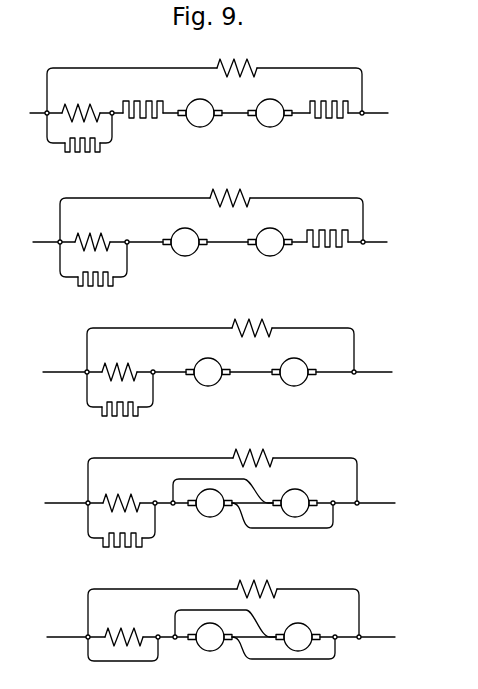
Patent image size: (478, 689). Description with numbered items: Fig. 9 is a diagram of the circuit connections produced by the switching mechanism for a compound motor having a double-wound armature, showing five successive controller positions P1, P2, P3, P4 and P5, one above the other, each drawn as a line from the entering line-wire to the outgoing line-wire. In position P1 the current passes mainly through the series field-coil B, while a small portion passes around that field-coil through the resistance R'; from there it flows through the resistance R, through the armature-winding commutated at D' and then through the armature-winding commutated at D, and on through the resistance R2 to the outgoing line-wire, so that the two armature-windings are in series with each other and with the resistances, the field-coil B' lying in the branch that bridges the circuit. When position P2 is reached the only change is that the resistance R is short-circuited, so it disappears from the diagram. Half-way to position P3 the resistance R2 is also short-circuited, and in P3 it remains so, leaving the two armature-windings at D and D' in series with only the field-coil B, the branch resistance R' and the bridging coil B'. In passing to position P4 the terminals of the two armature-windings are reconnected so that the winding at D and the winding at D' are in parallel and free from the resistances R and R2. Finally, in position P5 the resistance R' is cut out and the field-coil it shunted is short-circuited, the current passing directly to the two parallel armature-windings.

The series field-coil B is at (81, 103).
The resistance R is at (143, 101).
The armature-winding commutated at D is at (200, 103).
The armature-winding commutated at D' is at (270, 103).
The field-coil B' is at (237, 57).
The resistance R2 is at (329, 101).
The resistance R' is at (82, 154).
The first switch position P1 is at (32, 113).
The second switch position P2 is at (39, 242).
The third switch position P3 is at (55, 372).
The fourth switch position P4 is at (56, 503).
The fifth switch position P5 is at (58, 637).